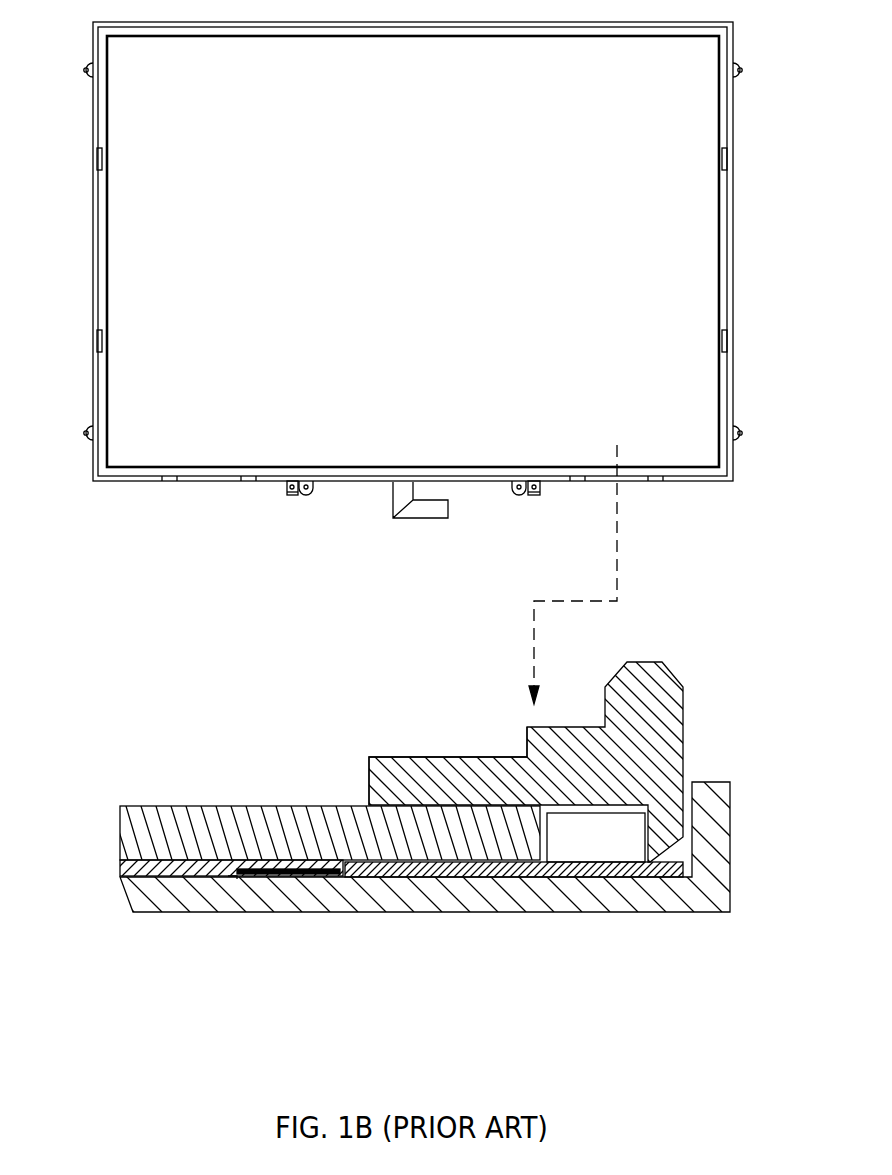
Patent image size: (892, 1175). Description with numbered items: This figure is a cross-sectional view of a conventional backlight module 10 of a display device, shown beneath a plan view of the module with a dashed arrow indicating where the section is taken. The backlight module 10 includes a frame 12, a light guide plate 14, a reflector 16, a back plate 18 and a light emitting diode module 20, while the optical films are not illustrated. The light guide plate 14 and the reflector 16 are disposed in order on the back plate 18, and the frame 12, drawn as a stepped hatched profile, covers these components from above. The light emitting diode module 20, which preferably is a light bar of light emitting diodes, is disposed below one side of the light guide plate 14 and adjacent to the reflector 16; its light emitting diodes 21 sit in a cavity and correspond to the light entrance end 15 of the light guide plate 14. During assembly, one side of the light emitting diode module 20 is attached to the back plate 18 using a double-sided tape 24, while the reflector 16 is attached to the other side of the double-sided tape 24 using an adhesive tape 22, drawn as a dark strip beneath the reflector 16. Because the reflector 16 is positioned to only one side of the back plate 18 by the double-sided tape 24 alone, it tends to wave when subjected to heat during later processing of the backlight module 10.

The backlight module 10 is at (274, 218).
The frame 12 is at (683, 704).
The light guide plate 14 is at (208, 805).
The light entrance end 15 is at (540, 830).
The reflector 16 is at (150, 868).
The back plate 18 is at (736, 831).
The light emitting diode module 20 is at (490, 878).
The light emitting diodes 21 is at (605, 838).
The adhesive tape 22 is at (285, 874).
The double-sided tape 24 is at (232, 878).